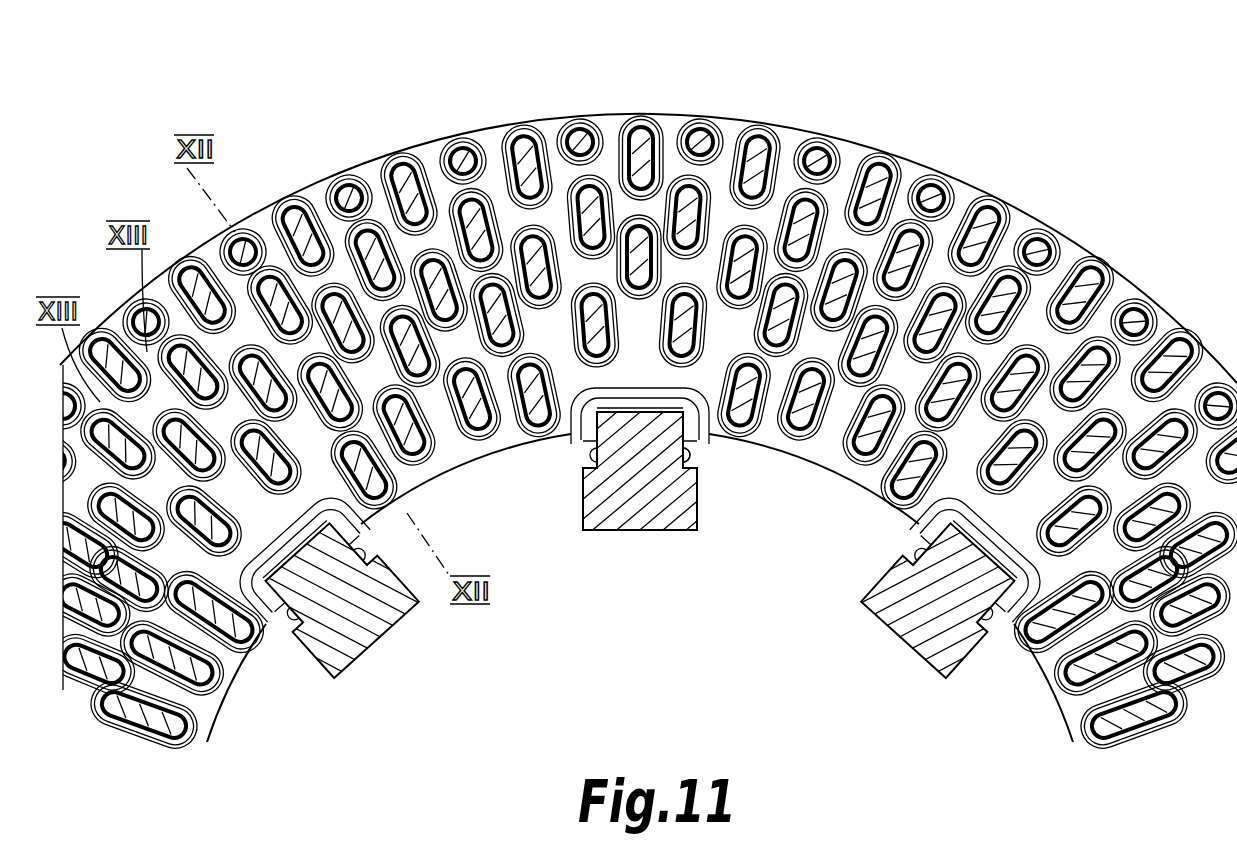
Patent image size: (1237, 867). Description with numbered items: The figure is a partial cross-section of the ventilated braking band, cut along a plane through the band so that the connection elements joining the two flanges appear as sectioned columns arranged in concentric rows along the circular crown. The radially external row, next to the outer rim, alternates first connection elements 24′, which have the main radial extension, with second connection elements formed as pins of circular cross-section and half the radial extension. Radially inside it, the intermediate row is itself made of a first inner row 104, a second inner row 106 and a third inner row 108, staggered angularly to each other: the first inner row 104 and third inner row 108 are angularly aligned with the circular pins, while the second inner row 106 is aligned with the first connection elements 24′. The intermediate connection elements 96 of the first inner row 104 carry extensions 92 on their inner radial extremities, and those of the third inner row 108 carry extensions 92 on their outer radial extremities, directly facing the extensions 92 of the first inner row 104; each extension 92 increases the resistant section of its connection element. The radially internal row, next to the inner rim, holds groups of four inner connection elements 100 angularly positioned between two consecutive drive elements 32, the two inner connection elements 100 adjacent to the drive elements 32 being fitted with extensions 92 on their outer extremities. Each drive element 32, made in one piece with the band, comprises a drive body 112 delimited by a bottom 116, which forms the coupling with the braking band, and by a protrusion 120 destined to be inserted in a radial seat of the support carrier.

The first connection elements 24′ is at (420, 152).
The extension 92 is at (656, 128).
The first inner row 104 is at (806, 215).
The second inner row 106 is at (850, 275).
The third inner row 108 is at (878, 340).
The drive body 112 is at (598, 510).
The bottom 116 is at (698, 452).
The protrusion 120 is at (632, 538).
The drive elements 32 is at (355, 640).
The inner connection elements 100 is at (208, 748).
The intermediate connection elements 96 is at (173, 463).